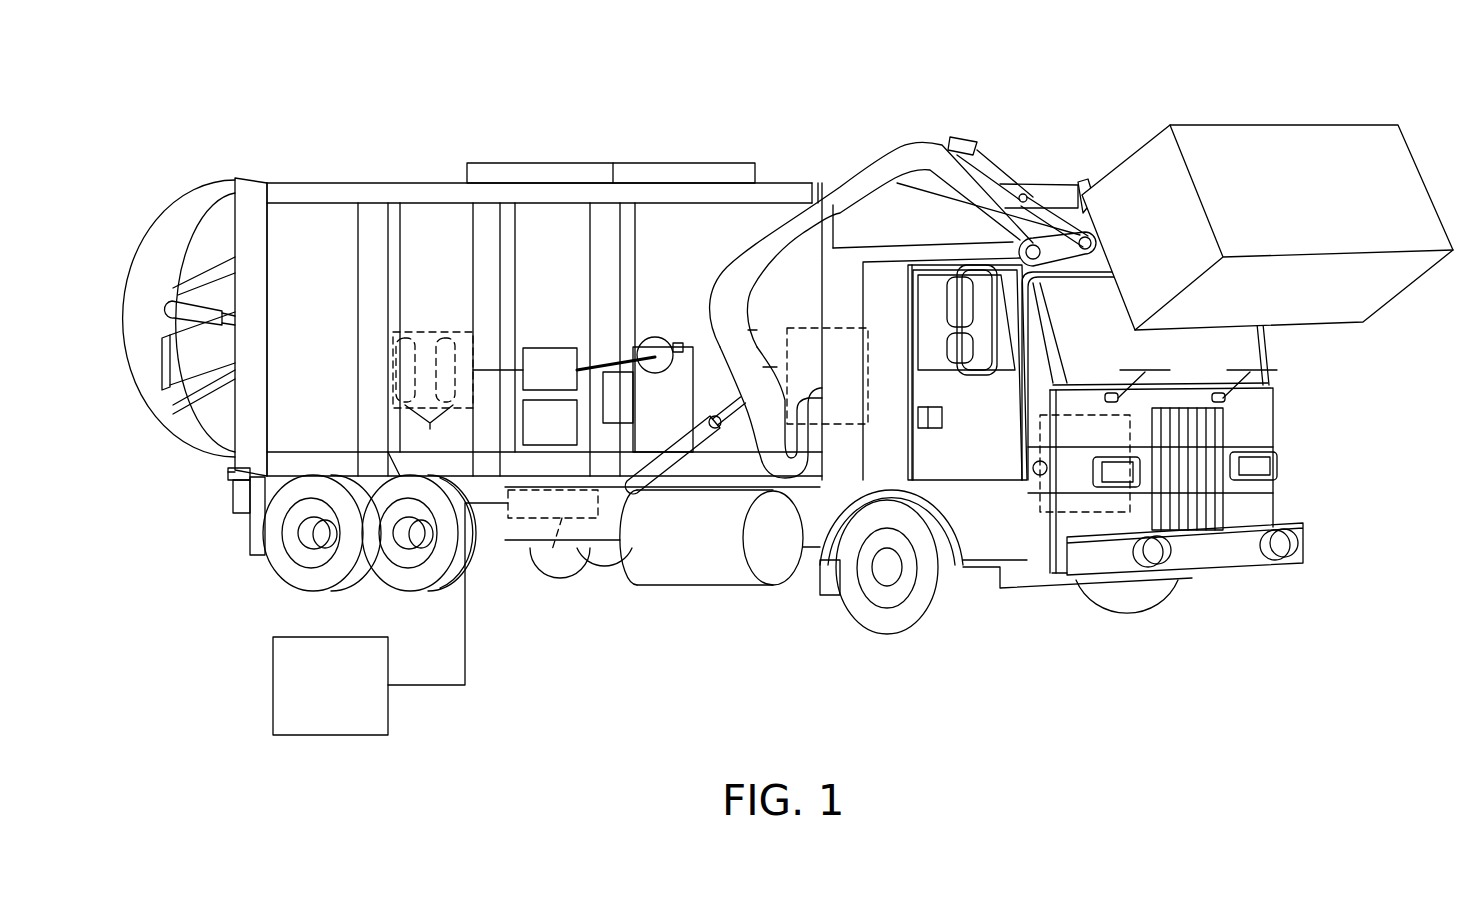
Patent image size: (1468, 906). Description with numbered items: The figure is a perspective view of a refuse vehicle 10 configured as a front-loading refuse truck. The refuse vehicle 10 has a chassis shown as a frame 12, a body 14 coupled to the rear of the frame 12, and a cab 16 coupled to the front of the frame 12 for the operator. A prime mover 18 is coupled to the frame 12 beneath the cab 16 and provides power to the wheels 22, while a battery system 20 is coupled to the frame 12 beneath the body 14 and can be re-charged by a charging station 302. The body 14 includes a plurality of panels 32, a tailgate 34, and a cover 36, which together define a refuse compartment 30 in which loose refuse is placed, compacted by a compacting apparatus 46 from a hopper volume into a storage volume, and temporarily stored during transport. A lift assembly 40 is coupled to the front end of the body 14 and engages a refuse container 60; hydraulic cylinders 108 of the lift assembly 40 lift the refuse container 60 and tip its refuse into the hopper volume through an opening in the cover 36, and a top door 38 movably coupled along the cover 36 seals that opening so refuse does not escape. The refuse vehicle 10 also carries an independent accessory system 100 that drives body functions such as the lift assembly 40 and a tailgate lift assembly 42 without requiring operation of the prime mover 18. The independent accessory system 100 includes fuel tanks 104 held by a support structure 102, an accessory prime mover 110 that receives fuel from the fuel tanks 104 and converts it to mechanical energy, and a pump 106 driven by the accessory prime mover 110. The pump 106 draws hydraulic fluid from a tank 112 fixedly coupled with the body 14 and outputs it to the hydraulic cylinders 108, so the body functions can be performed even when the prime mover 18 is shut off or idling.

The refuse vehicle 10 is at (393, 36).
The frame 12 is at (604, 531).
The body 14 is at (428, 195).
The cab 16 is at (1040, 538).
The prime mover 18 is at (1093, 513).
The battery system 20 is at (540, 568).
The wheels 22 is at (926, 624).
The refuse compartment 30 is at (790, 135).
The panels 32 is at (320, 220).
The tailgate 34 is at (190, 236).
The cover 36 is at (386, 183).
The top door 38 is at (528, 162).
The lift assembly 40 is at (977, 86).
The tailgate lift assembly 42 is at (146, 480).
The compacting apparatus 46 is at (815, 329).
The refuse container 60 is at (1290, 138).
The independent accessory system 100 is at (660, 312).
The support structure 102 is at (421, 331).
The fuel tanks 104 is at (429, 428).
The pump 106 is at (636, 374).
The hydraulic cylinders 108 is at (170, 314).
The accessory prime mover 110 is at (554, 348).
The tank 112 is at (528, 452).
The charging station 302 is at (390, 619).